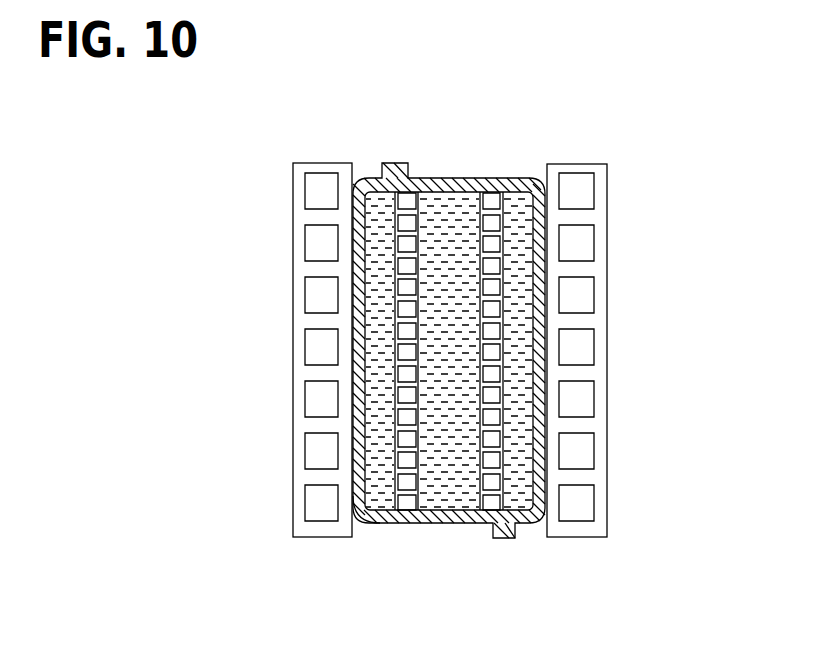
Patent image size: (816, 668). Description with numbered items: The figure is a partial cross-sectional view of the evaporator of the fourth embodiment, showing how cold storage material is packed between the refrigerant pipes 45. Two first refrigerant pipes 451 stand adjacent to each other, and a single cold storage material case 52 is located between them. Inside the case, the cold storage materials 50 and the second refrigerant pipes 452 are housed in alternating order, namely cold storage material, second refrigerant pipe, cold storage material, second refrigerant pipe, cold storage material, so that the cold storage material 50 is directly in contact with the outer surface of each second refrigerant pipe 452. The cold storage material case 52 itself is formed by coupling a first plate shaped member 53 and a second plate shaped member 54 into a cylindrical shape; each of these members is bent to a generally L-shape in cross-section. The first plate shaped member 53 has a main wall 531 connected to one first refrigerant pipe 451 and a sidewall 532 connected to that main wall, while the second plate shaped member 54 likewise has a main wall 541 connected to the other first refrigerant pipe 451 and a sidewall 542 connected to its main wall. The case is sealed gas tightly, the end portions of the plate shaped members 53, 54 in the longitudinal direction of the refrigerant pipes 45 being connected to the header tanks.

The refrigerant pipe 45 is at (322, 541).
The first refrigerant pipe 451 is at (316, 163).
The second refrigerant pipe 452 is at (430, 193).
The cold storage material 50 is at (518, 277).
The cold storage material case 52 is at (349, 396).
The first plate shaped member 53 is at (350, 447).
The main wall 531 is at (358, 475).
The sidewall 532 is at (447, 518).
The second plate shaped member 54 is at (550, 350).
The main wall 541 is at (536, 300).
The sidewall 542 is at (510, 186).